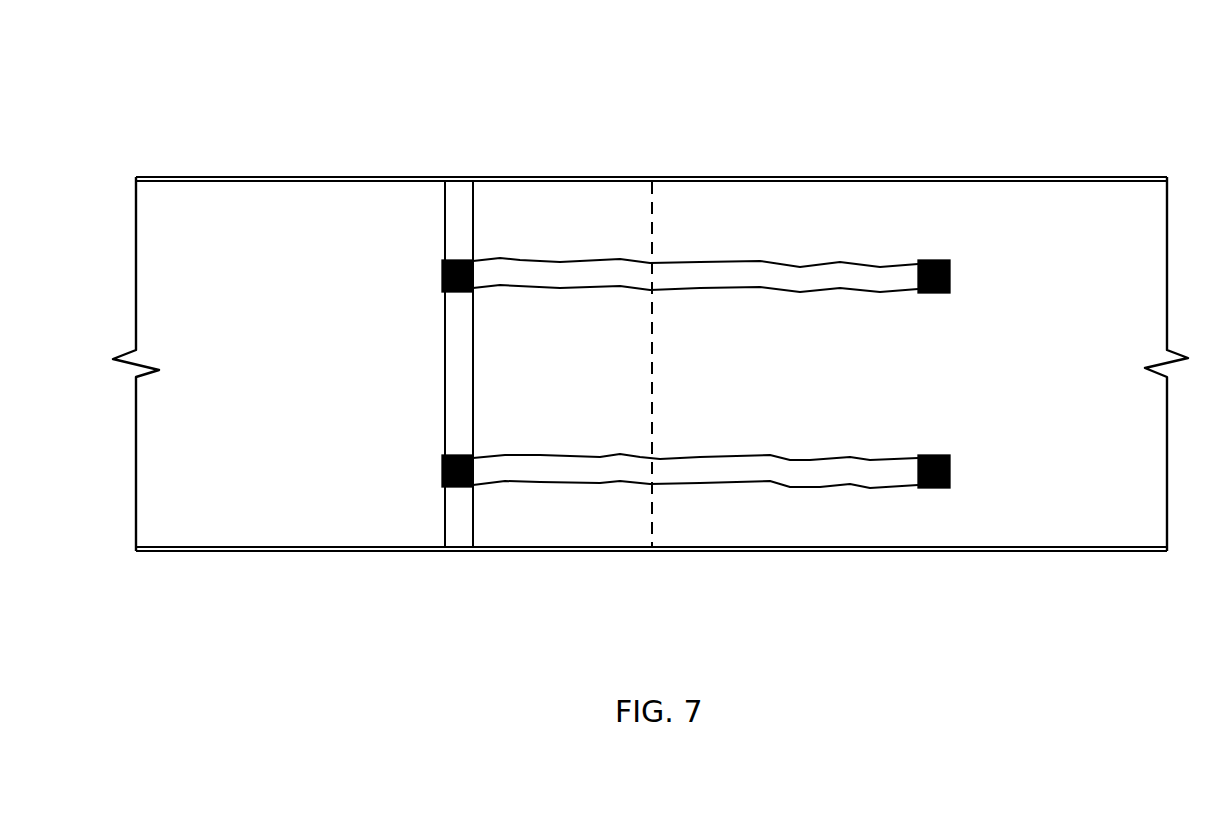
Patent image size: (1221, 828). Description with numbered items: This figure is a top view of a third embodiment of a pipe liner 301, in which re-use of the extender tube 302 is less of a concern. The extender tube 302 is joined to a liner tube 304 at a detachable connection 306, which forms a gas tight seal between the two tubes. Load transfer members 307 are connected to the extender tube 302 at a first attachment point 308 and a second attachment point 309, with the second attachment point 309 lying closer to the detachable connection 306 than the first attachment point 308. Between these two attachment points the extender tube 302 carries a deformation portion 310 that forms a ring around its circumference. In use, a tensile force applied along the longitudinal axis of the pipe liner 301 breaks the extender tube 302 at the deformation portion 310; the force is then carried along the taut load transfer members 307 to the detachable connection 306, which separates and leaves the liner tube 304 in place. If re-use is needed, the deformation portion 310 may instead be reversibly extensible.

The pipe liner 301 is at (262, 60).
The extender tube 302 is at (1081, 195).
The liner tube 304 is at (251, 535).
The detachable connection 306 is at (458, 551).
The load transfer members 307 is at (737, 290).
The first attachment point 308 is at (950, 273).
The second attachment point 309 is at (442, 278).
The deformation portion 310 is at (650, 248).